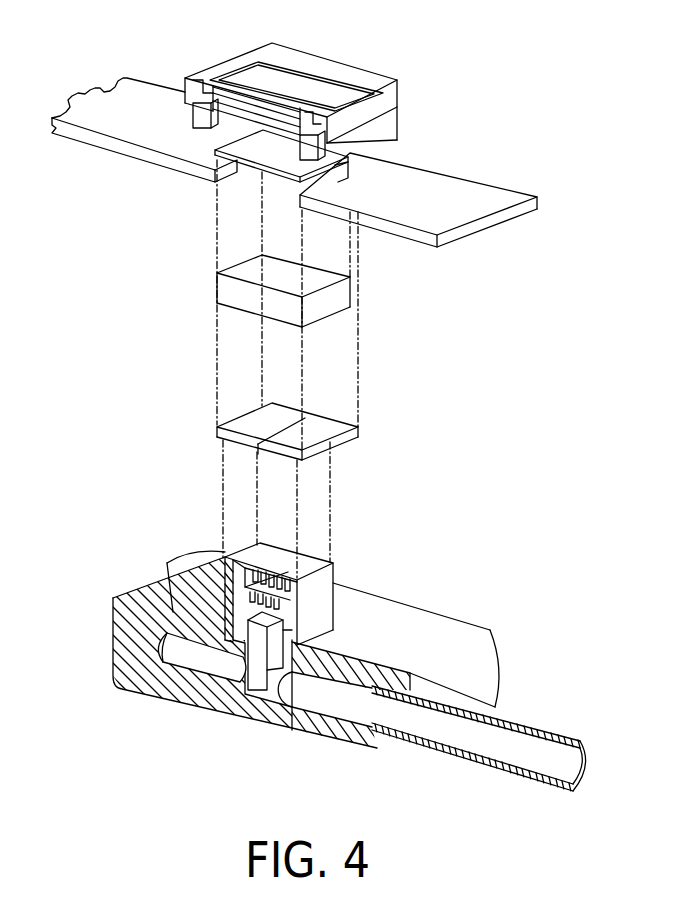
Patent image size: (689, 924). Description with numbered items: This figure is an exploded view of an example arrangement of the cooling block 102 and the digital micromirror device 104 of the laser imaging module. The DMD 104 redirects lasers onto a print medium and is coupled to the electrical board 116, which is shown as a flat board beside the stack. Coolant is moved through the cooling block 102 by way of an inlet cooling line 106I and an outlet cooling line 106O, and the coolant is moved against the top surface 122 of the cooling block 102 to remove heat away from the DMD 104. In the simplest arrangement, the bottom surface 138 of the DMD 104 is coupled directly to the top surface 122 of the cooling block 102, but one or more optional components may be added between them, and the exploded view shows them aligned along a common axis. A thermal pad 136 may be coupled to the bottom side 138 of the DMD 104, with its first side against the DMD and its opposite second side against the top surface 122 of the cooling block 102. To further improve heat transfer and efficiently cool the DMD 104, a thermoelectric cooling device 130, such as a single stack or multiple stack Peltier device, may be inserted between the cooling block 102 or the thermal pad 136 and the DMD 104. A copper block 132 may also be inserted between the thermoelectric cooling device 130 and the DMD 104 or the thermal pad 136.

The cooling block 102 is at (123, 657).
The digital micromirror device 104 is at (195, 71).
The inlet cooling line 106I is at (512, 703).
The outlet cooling line 106O is at (198, 668).
The electrical board 116 is at (422, 188).
The top surface 122 is at (312, 557).
The thermoelectric cooling device 130 is at (243, 453).
The copper block 132 is at (343, 302).
The thermal pad 136 is at (222, 112).
The bottom surface 138 is at (271, 152).